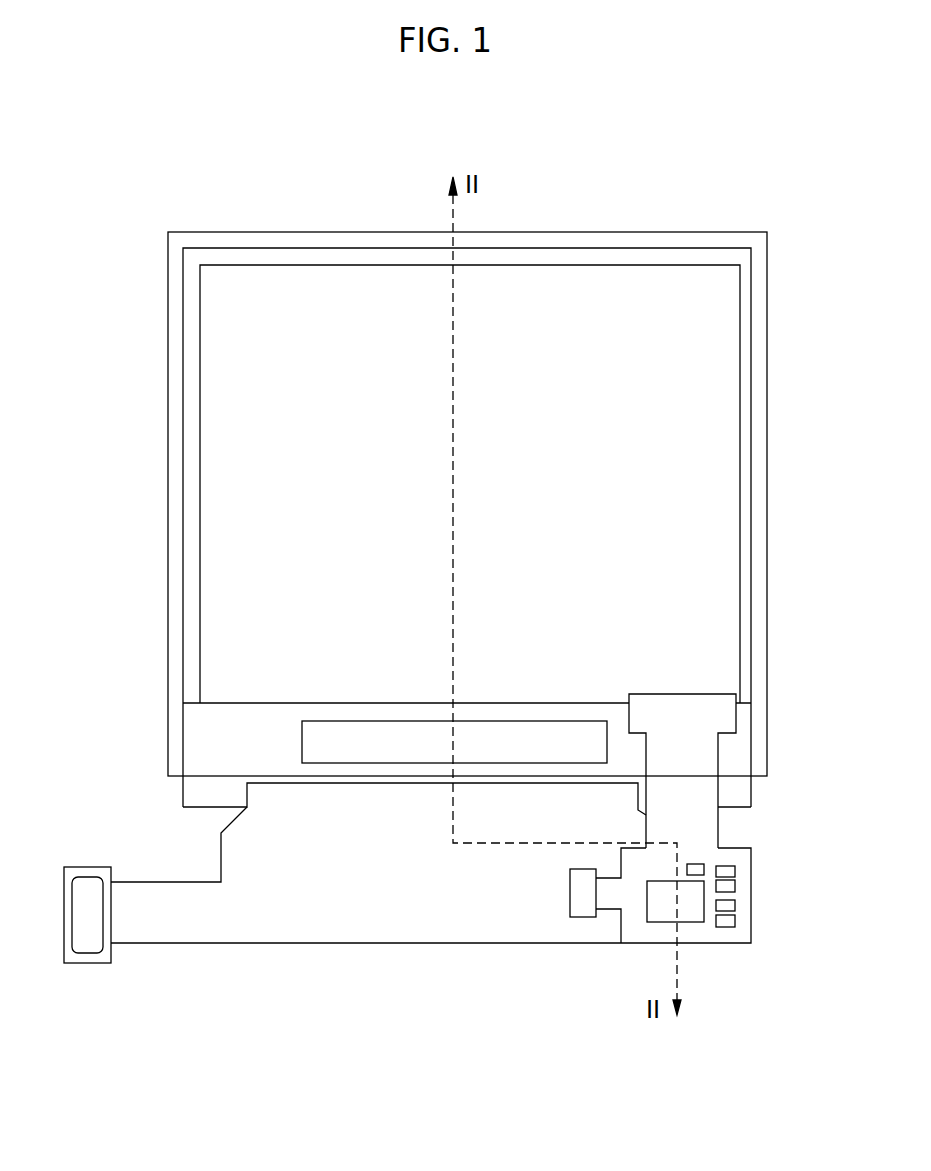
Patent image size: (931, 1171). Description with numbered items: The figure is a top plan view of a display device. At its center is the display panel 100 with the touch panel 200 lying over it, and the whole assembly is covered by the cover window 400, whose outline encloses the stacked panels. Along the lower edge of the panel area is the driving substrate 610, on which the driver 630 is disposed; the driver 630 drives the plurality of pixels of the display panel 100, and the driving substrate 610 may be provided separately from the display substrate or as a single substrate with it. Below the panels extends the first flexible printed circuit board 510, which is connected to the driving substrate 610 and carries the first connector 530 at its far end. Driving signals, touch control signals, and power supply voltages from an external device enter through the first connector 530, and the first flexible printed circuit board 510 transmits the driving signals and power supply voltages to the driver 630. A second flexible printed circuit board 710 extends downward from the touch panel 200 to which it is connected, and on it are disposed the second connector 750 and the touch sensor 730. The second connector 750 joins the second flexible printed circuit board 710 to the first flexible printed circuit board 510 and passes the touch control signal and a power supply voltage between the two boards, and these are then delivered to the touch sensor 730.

The display panel 100 is at (216, 520).
The touch panel 200 is at (183, 488).
The cover window 400 is at (168, 433).
The first flexible printed circuit board 510 is at (393, 943).
The first connector 530 is at (86, 953).
The driving substrate 610 is at (190, 717).
The driver 630 is at (302, 740).
The second flexible printed circuit board 710 is at (708, 752).
The touch sensor 730 is at (695, 924).
The second connector 750 is at (583, 918).